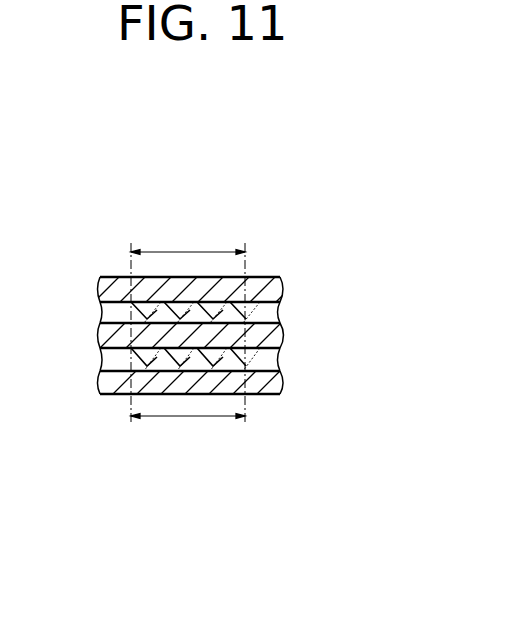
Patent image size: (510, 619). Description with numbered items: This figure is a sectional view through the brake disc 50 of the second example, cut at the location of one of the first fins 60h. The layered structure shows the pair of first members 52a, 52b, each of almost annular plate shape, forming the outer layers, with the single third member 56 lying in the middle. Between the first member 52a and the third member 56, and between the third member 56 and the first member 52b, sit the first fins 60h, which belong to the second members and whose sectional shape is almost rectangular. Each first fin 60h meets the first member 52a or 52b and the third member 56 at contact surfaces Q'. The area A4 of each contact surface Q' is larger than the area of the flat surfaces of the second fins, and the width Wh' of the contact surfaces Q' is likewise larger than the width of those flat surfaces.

The brake disc 50 is at (320, 268).
The first member 52a is at (118, 289).
The first member 52b is at (130, 372).
The third member 56 is at (110, 335).
The first fin 60h is at (238, 320).
The contact surface Q' is at (162, 336).
The width of the contact surfaces Wh' is at (188, 236).
The area of each contact surface A4 is at (188, 431).